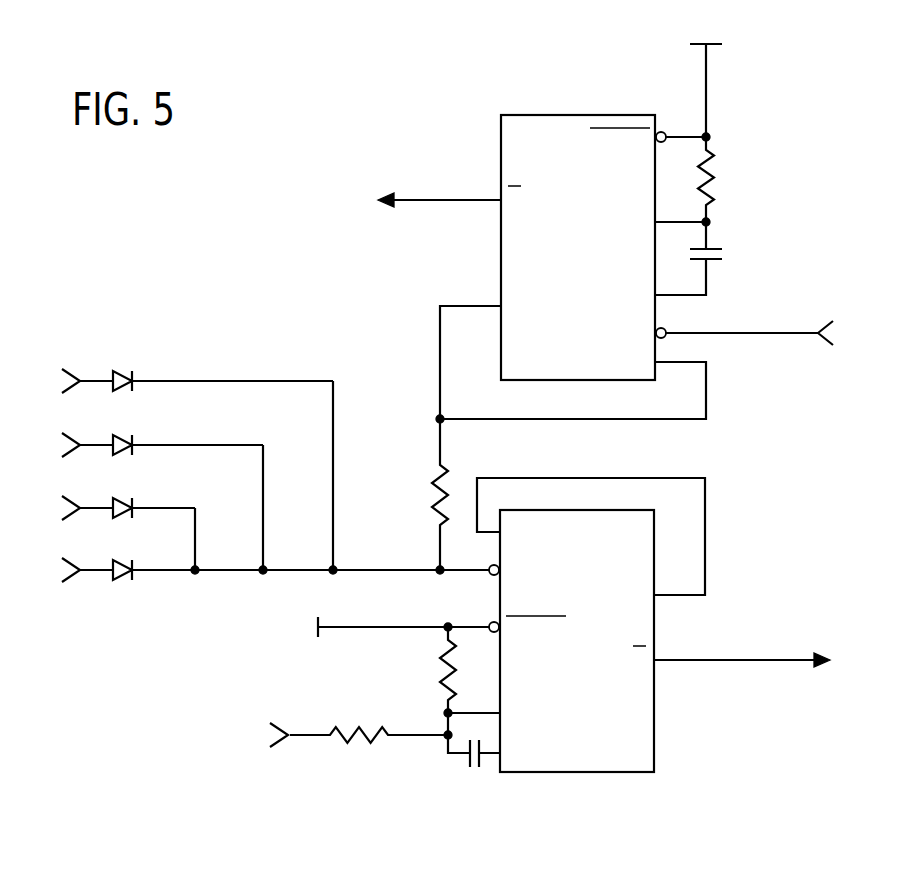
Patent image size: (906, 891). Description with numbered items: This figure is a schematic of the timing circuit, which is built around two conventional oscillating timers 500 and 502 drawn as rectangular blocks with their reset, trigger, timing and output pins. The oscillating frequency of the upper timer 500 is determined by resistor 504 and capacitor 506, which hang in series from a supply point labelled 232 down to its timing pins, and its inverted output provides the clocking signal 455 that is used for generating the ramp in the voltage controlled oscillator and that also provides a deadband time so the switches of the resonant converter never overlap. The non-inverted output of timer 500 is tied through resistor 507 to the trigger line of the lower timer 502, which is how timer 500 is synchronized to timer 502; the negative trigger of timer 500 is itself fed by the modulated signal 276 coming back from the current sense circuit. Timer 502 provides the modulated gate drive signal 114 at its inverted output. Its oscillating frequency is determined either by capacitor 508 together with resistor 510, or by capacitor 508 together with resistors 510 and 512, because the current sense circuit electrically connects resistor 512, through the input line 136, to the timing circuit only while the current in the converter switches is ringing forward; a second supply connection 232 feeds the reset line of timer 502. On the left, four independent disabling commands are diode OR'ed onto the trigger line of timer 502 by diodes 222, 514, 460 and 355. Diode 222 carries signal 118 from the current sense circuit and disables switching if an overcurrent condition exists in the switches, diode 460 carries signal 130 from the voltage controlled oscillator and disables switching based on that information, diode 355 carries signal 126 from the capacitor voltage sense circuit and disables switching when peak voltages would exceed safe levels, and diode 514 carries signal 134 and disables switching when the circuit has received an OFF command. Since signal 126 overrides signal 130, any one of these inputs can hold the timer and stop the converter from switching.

The oscillating timer 500 is at (553, 86).
The oscillating timer 502 is at (598, 775).
The resistor 504 is at (714, 182).
The capacitor 506 is at (716, 262).
The resistor 507 is at (435, 505).
The capacitor 508 is at (462, 770).
The resistor 510 is at (438, 668).
The resistor 512 is at (355, 748).
The diode 514 is at (128, 578).
The diode 222 is at (120, 376).
The diode 460 is at (122, 442).
The diode 355 is at (109, 506).
The signal 134 is at (72, 568).
The signal 126 is at (186, 381).
The signal 130 is at (190, 445).
The signal 118 is at (160, 508).
The supply voltage 232 is at (700, 44).
The clocking signal 455 is at (415, 199).
The modulated signal 276 is at (822, 345).
The gate drive signal 114 is at (746, 647).
The input signal 136 is at (274, 748).